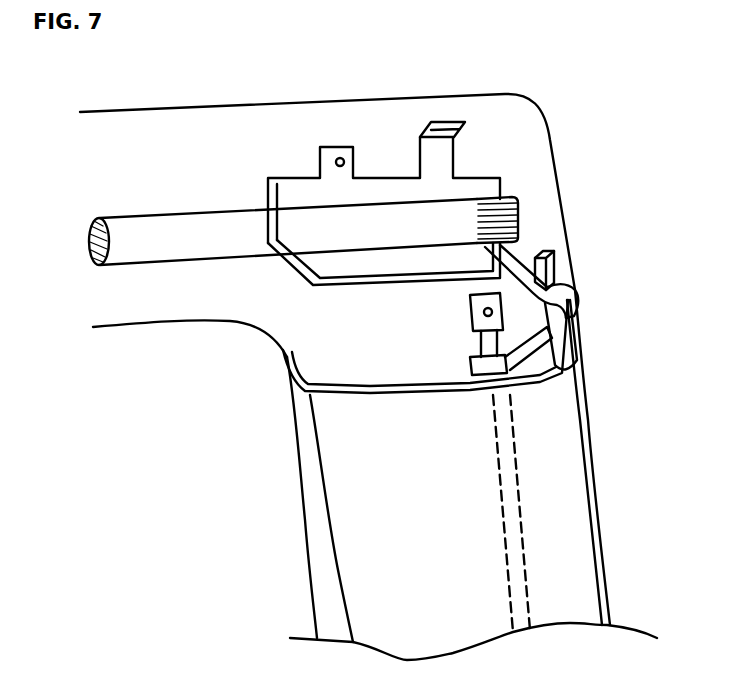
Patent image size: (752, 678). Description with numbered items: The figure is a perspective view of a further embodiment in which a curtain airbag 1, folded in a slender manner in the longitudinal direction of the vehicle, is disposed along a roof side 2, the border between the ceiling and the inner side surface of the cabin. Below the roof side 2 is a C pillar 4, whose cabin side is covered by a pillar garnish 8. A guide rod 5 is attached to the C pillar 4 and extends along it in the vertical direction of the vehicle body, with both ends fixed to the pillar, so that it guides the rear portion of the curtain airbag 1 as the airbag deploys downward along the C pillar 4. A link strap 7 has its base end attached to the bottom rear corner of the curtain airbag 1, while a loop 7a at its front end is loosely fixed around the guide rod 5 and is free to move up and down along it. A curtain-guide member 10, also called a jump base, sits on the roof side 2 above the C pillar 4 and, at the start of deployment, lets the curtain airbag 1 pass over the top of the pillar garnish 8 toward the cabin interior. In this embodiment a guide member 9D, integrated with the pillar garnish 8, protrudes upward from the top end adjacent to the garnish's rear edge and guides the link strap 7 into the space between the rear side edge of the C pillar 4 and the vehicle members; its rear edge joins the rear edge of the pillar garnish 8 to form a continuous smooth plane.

The curtain airbag 1 is at (140, 215).
The roof side 2 is at (233, 123).
The C pillar 4 is at (355, 366).
The guide rod 5 is at (484, 341).
The link strap 7 is at (520, 248).
The loop 7a is at (473, 363).
The pillar garnish 8 is at (357, 515).
The guide member 9D is at (552, 262).
The curtain-guide member 10 is at (346, 272).